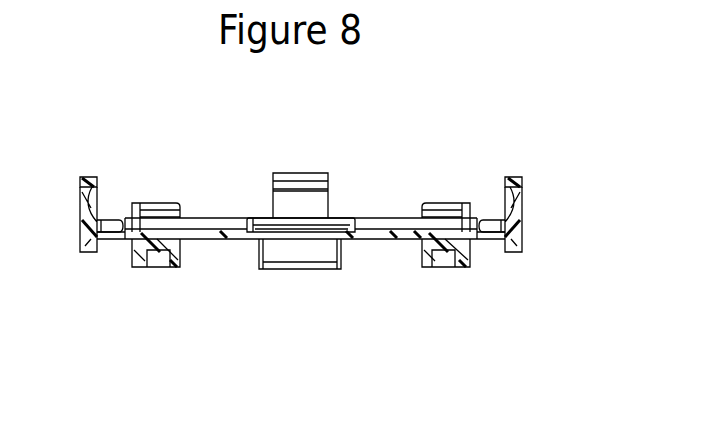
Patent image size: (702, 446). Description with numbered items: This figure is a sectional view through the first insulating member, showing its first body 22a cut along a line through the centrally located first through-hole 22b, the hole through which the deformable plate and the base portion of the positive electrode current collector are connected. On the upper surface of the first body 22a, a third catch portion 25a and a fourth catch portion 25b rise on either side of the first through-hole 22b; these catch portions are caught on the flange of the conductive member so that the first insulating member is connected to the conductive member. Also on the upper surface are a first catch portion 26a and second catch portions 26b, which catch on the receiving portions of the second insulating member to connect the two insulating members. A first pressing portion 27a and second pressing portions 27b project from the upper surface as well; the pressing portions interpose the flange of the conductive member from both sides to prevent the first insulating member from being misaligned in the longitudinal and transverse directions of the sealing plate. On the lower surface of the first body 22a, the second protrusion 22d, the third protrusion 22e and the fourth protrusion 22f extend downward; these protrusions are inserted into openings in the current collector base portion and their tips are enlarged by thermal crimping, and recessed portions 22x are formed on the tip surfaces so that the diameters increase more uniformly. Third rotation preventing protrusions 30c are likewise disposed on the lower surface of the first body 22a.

The first body 22a is at (212, 217).
The first through-hole 22b is at (313, 226).
The second protrusion 22d is at (285, 250).
The third protrusion 22e is at (177, 260).
The fourth protrusion 22f is at (463, 258).
The recessed portion 22x is at (160, 262).
The third catch portion 25a is at (438, 204).
The fourth catch portion 25b is at (153, 204).
The first catch portion 26a is at (300, 172).
The second catch portion 26b is at (90, 178).
The first pressing portion 27a is at (332, 224).
The second pressing portion 27b is at (107, 220).
The third rotation preventing protrusion 30c is at (88, 245).